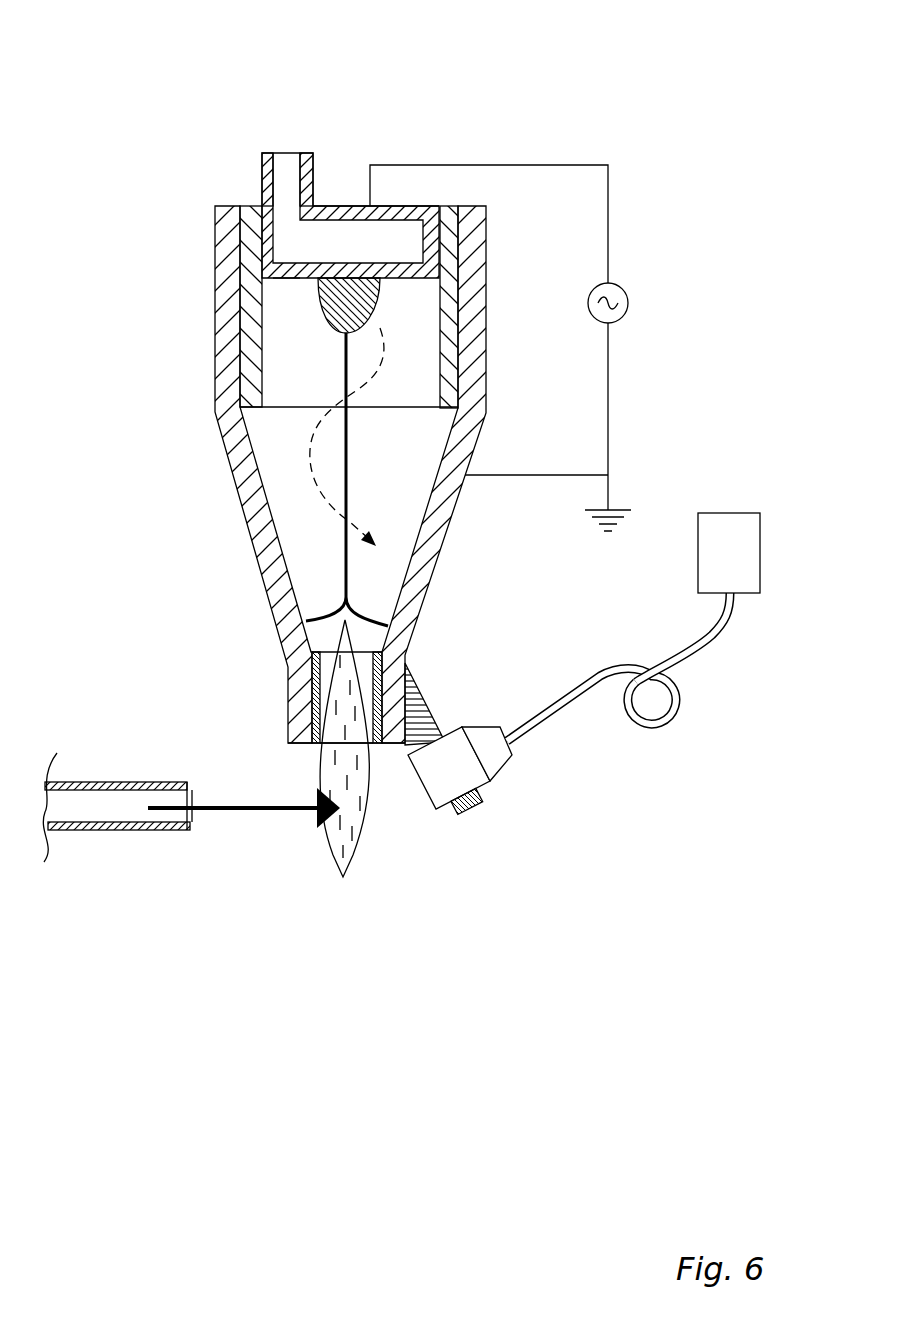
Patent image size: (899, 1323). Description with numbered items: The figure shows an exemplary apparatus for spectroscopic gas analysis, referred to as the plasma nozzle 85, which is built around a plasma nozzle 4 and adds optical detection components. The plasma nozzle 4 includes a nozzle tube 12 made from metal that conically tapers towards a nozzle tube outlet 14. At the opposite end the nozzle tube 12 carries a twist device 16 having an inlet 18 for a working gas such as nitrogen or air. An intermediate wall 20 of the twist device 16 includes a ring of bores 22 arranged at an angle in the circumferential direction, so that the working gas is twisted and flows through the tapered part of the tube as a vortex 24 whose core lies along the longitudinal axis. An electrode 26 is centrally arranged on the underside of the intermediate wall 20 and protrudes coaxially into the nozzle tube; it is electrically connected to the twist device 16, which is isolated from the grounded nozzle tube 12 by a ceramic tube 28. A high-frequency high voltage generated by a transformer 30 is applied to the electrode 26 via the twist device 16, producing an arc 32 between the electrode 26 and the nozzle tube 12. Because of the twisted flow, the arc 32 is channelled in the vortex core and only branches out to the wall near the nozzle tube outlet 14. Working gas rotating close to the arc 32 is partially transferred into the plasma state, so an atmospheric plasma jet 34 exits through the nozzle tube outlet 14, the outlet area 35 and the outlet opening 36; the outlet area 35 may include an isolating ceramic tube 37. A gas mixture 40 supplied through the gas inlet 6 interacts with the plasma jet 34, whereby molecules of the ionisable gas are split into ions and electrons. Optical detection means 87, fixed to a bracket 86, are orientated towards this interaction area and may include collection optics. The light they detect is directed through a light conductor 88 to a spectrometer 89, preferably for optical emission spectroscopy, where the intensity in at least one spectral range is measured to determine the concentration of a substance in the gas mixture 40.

The plasma nozzle 85 is at (92, 71).
The plasma nozzle 4 is at (218, 527).
The gas inlet 6 is at (105, 807).
The nozzle tube 12 is at (228, 387).
The nozzle tube outlet 14 is at (362, 661).
The twist device 16 is at (343, 186).
The inlet 18 is at (263, 168).
The intermediate wall 20 is at (330, 257).
The bores 22 is at (293, 278).
The vortex 24 is at (312, 433).
The electrode 26 is at (322, 308).
The ceramic tube 28 is at (447, 262).
The transformer 30 is at (627, 287).
The arc 32 is at (349, 462).
The plasma jet 34 is at (358, 838).
The outlet area 35 is at (296, 681).
The outlet opening 36 is at (320, 758).
The isolating ceramic tube 37 is at (316, 698).
The gas mixture 40 is at (226, 800).
The bracket 86 is at (472, 808).
The optical detection means 87 is at (455, 750).
The light conductor 88 is at (690, 662).
The spectrometer 89 is at (729, 553).